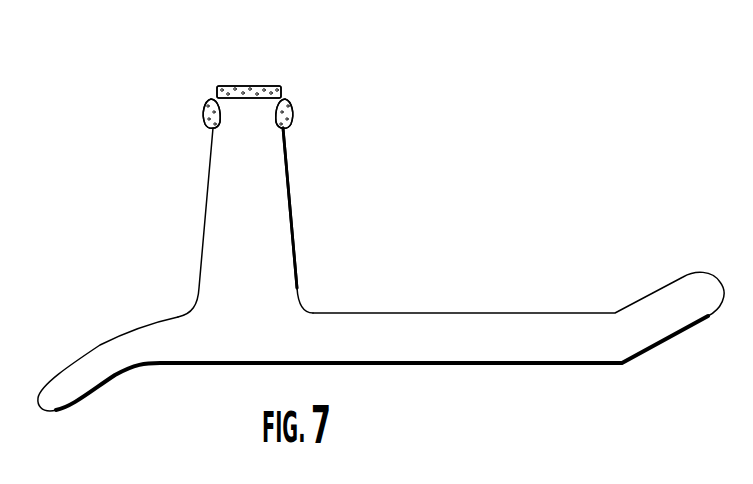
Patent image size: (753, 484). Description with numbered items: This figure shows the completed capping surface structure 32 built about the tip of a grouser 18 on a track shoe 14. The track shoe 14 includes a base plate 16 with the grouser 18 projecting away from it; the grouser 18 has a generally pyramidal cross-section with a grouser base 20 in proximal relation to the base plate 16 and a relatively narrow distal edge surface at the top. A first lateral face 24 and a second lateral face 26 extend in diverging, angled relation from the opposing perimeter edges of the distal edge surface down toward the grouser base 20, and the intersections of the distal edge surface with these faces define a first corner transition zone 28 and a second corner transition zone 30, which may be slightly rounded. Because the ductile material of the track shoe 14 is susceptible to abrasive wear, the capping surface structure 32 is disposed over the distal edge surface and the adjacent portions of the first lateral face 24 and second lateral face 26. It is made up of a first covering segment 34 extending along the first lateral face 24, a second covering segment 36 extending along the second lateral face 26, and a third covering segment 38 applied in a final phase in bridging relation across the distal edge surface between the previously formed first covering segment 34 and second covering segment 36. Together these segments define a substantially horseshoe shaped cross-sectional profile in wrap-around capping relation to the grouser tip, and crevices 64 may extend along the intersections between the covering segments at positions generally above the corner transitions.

The track shoe 14 is at (381, 210).
The base plate 16 is at (503, 305).
The grouser 18 is at (302, 252).
The grouser base 20 is at (313, 310).
The first lateral face 24 is at (296, 216).
The second lateral face 26 is at (202, 236).
The first corner transition zone 28 is at (266, 106).
The second corner transition zone 30 is at (233, 105).
The capping surface structure 32 is at (215, 79).
The first covering segment 34 is at (293, 103).
The second covering segment 36 is at (203, 120).
The third covering segment 38 is at (240, 86).
The crevices 64 is at (213, 99).